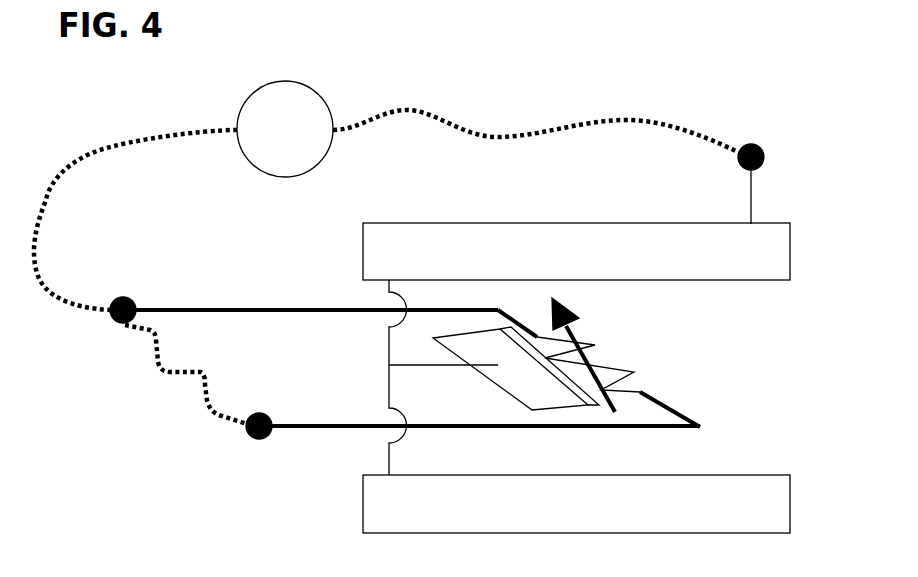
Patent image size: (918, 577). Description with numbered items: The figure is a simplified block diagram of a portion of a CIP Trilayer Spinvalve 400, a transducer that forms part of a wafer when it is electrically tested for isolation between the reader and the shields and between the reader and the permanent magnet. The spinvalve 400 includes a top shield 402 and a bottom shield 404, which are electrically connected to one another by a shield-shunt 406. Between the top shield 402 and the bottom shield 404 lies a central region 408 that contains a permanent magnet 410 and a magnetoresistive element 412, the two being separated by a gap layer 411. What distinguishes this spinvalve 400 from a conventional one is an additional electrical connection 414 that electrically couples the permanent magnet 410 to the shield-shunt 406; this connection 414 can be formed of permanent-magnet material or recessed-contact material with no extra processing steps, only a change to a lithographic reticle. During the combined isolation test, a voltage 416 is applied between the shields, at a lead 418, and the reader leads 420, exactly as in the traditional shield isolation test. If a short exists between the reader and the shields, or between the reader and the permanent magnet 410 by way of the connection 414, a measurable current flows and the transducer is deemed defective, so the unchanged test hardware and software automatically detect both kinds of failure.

The CIP Trilayer Spinvalve 400 is at (574, 349).
The top shield 402 is at (455, 250).
The bottom shield 404 is at (760, 496).
The shield-shunt 406 is at (389, 395).
The central region 408 is at (700, 348).
The permanent magnet 410 is at (554, 398).
The gap layer 411 is at (585, 398).
The magnetoresistive element 412 is at (640, 383).
The additional electrical connection 414 is at (435, 366).
The voltage 416 is at (288, 82).
The lead 418 is at (758, 148).
The reader leads 420 is at (247, 428).